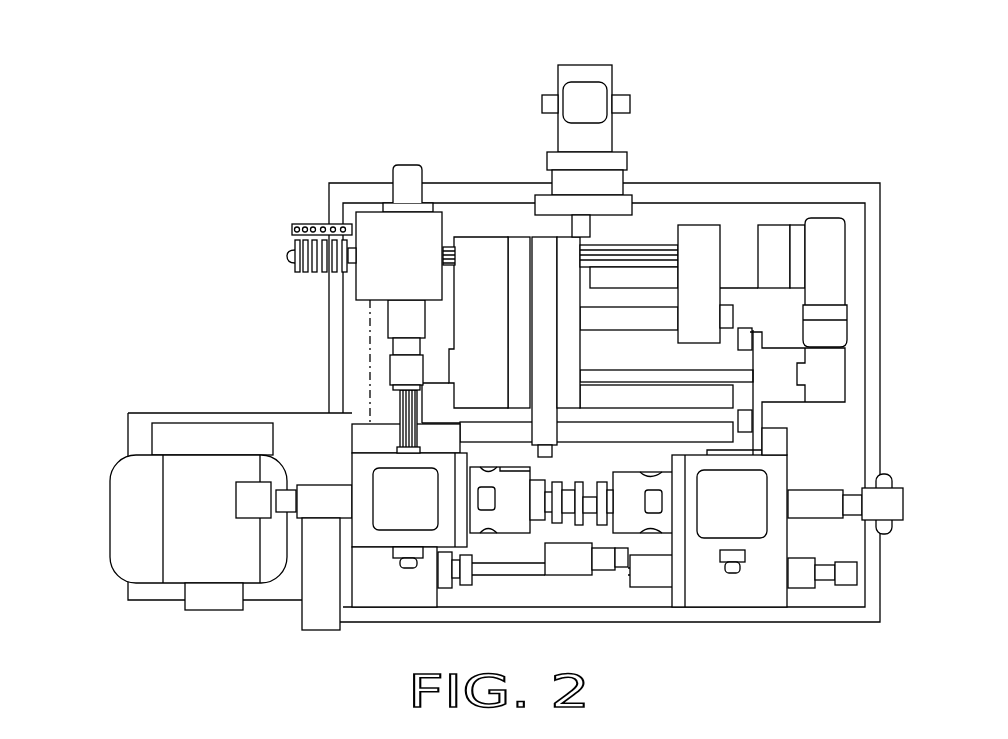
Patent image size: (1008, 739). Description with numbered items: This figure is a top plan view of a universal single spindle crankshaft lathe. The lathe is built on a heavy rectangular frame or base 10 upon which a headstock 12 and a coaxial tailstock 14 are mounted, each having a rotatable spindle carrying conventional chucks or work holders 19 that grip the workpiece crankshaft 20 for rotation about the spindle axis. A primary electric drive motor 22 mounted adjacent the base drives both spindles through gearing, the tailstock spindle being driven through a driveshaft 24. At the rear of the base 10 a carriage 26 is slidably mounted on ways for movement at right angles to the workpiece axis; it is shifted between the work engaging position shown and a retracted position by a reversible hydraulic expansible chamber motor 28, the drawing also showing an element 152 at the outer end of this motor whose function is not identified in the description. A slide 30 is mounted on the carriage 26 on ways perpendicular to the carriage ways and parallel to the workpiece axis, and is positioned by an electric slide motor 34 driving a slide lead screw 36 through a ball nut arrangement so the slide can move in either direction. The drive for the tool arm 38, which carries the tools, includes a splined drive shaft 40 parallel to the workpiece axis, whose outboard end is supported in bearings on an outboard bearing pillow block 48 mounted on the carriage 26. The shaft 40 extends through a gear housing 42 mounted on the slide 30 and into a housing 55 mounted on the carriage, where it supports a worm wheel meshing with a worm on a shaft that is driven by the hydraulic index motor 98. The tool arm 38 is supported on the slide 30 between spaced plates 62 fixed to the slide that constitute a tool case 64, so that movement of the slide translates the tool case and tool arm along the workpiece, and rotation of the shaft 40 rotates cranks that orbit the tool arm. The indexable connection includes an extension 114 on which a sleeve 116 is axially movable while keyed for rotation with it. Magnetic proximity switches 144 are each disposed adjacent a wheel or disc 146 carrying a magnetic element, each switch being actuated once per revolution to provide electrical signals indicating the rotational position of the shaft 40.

The frame or base 10 is at (788, 183).
The headstock 12 is at (410, 510).
The tailstock 14 is at (741, 518).
The chucks or work holders 19 is at (523, 510).
The workpiece crankshaft 20 is at (575, 527).
The primary electric drive motor 22 is at (219, 552).
The driveshaft 24 is at (485, 577).
The carriage 26 is at (779, 322).
The reversible expansible chamber motor 28 is at (612, 136).
The slide 30 is at (580, 397).
The electric slide motor 34 is at (835, 385).
The slide lead screw 36 is at (737, 370).
The tool arm 38 is at (556, 326).
The splined drive shaft 40 is at (623, 256).
The gear housing 42 is at (493, 285).
The outboard bearing pillow block 48 is at (710, 273).
The housing 55 is at (409, 265).
The plates 62 is at (565, 318).
The tool case 64 is at (574, 353).
The hydraulic index motor 98 is at (422, 178).
The indexable connection extension 114 is at (402, 407).
The sleeve 116 is at (403, 343).
The magnetic proximity switches 144 is at (313, 223).
The wheel or disc 146 is at (313, 273).
The piston rod end 152 is at (600, 92).